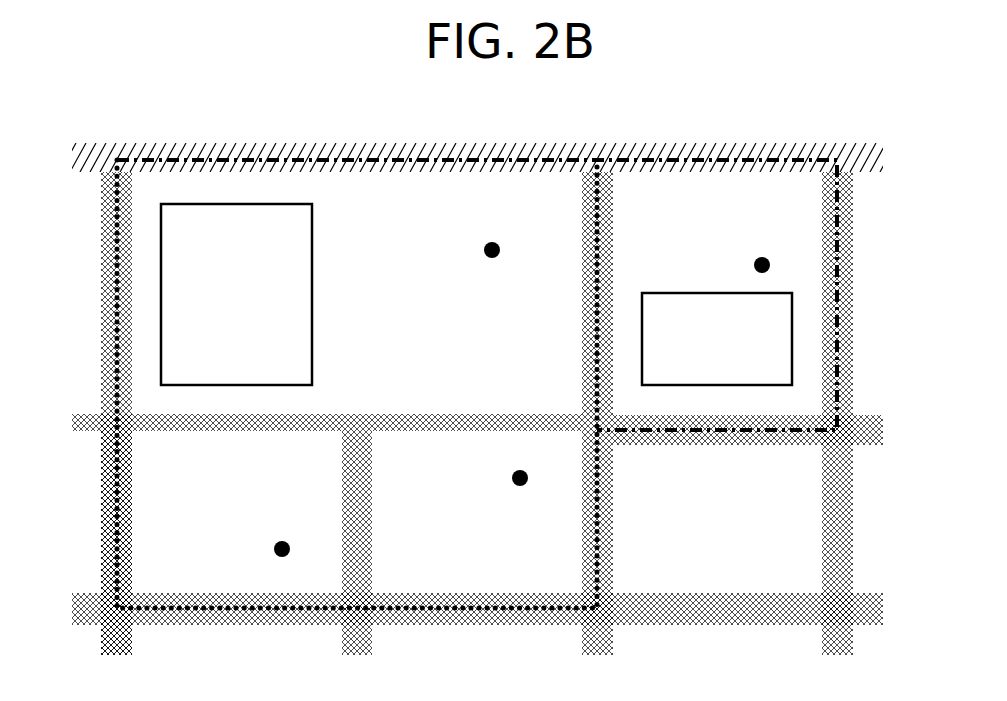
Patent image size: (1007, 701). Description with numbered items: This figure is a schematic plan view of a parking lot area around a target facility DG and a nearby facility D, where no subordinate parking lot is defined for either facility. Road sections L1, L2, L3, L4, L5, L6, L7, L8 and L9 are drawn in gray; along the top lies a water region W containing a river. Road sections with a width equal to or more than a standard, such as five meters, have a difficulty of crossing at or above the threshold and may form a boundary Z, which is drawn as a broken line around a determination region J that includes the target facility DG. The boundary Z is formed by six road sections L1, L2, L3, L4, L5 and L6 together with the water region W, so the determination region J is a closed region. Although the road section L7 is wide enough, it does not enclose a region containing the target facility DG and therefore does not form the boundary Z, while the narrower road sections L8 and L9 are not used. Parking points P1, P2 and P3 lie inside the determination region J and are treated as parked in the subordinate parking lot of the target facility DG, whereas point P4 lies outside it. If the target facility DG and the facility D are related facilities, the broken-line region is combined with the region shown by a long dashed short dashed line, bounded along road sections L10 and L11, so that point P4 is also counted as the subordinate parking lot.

The water region W is at (473, 264).
The boundary Z is at (317, 384).
The determination region J is at (364, 394).
The facility D is at (726, 349).
The target facility DG is at (253, 310).
The road section L1 is at (81, 413).
The road section L2 is at (81, 543).
The road section L3 is at (222, 631).
The road section L4 is at (627, 631).
The road section L5 is at (645, 543).
The road section L6 is at (644, 301).
The road section L7 is at (405, 543).
The road section L8 is at (207, 444).
The road section L9 is at (462, 443).
The line L10 is at (748, 452).
The line L11 is at (889, 413).
The point P1 is at (511, 251).
The point P2 is at (301, 550).
The point P3 is at (539, 479).
The point P4 is at (781, 266).